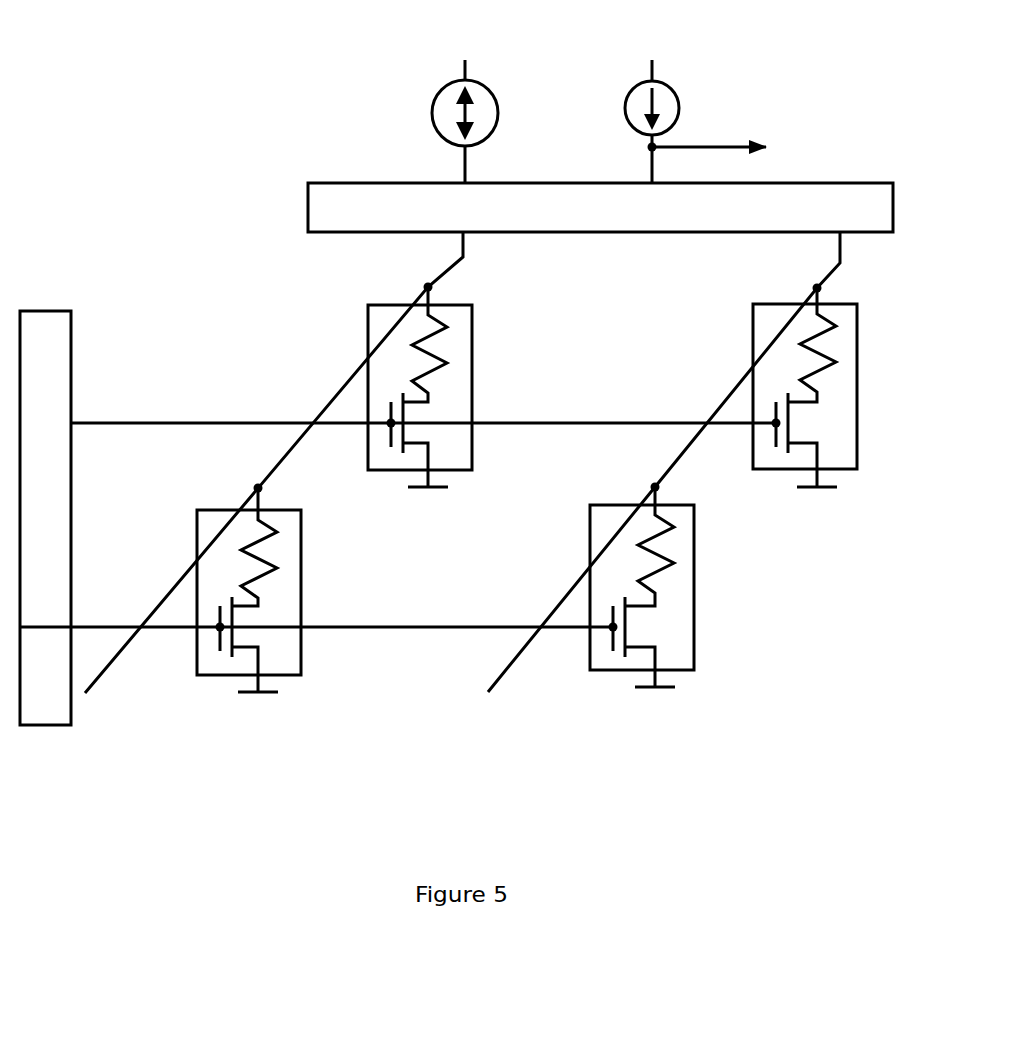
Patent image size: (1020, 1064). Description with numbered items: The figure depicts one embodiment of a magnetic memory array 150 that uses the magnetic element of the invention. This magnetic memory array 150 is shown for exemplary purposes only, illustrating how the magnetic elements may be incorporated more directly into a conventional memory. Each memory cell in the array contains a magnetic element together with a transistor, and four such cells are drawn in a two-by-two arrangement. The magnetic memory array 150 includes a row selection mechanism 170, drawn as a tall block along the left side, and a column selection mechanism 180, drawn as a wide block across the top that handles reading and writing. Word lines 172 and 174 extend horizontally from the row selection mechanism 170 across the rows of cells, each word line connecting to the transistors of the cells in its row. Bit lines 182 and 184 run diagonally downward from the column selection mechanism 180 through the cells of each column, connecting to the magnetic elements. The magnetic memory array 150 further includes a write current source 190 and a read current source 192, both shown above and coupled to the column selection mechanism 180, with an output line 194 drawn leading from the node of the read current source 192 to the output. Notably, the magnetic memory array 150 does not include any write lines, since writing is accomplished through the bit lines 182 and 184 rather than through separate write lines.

The magnetic memory array 150 is at (461, 370).
The row selection mechanism 170 is at (72, 345).
The word line 172 is at (428, 627).
The word line 174 is at (103, 424).
The column selection mechanism 180 is at (307, 212).
The bit line 182 is at (325, 412).
The bit line 184 is at (720, 412).
The write current source 190 is at (432, 110).
The read current source 192 is at (625, 108).
The output line 194 is at (687, 147).